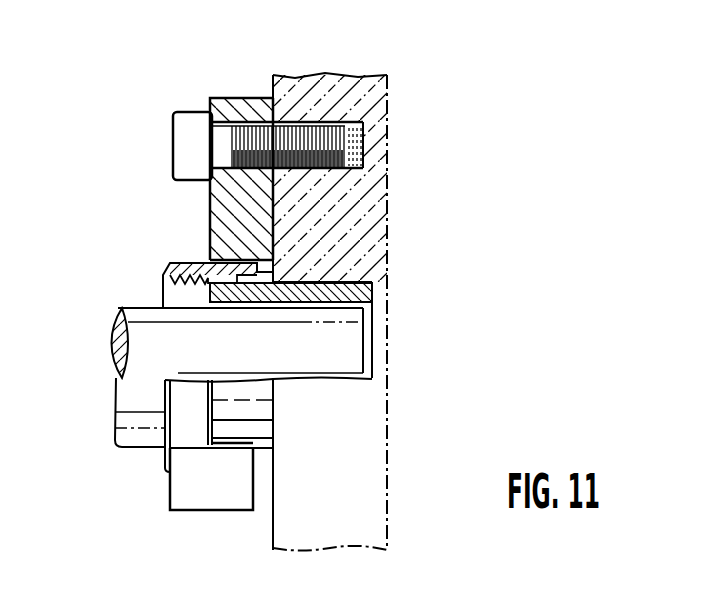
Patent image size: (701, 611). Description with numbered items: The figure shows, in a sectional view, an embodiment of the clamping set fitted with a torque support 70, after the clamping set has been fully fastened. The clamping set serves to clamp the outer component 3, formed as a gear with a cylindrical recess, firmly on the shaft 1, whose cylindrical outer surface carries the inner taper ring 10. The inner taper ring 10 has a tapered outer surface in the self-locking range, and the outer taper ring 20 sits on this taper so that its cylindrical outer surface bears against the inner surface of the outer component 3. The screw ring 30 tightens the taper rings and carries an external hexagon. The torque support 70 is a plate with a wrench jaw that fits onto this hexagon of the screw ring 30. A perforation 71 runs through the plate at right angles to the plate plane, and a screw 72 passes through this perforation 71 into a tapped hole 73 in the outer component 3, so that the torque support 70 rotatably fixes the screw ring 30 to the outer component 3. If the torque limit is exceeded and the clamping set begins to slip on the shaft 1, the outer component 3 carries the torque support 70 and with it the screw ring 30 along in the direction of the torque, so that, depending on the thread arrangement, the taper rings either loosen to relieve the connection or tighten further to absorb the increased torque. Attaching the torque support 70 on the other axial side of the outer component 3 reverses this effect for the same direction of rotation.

The shaft 1 is at (123, 405).
The outer component 3 is at (375, 211).
The inner taper ring 10 is at (173, 298).
The outer taper ring 20 is at (372, 300).
The screw ring 30 is at (164, 479).
The torque support 70 is at (206, 243).
The perforation 71 is at (205, 128).
The screw 72 is at (180, 148).
The tapped hole 73 is at (363, 130).